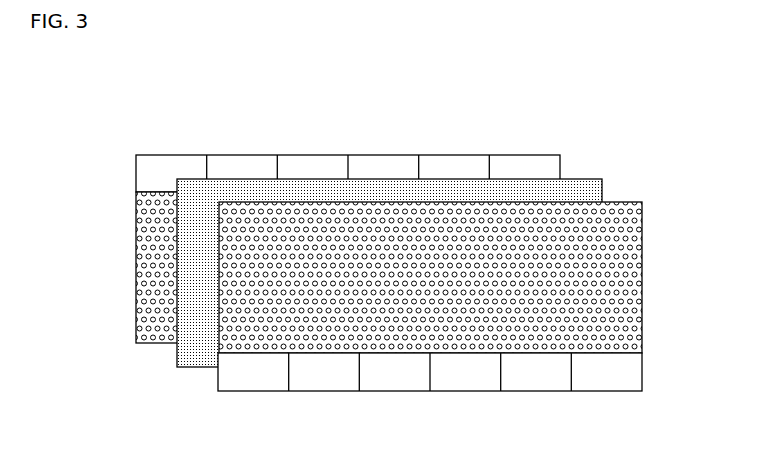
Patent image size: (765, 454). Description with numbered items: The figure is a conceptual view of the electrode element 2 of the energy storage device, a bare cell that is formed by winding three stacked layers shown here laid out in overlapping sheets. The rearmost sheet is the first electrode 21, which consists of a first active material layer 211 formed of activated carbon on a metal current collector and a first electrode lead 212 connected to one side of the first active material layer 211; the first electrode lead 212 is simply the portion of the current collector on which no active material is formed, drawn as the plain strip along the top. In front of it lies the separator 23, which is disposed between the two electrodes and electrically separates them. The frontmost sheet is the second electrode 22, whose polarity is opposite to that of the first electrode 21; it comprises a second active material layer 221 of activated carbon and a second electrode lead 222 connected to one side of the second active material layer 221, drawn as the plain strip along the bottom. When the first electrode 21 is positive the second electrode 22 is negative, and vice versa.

The electrode element 2 is at (528, 130).
The first electrode 21 is at (75, 172).
The first active material layer 211 is at (137, 270).
The first electrode lead 212 is at (147, 172).
The second electrode 22 is at (700, 293).
The second active material layer 221 is at (640, 293).
The second electrode lead 222 is at (632, 370).
The separator 23 is at (193, 362).